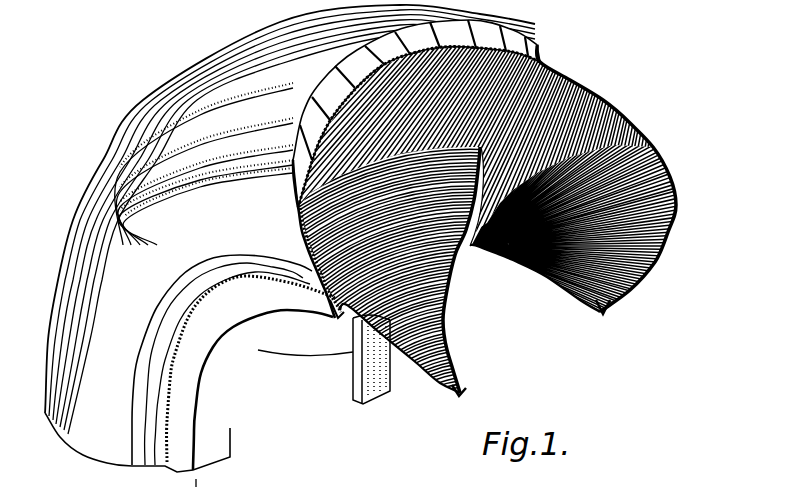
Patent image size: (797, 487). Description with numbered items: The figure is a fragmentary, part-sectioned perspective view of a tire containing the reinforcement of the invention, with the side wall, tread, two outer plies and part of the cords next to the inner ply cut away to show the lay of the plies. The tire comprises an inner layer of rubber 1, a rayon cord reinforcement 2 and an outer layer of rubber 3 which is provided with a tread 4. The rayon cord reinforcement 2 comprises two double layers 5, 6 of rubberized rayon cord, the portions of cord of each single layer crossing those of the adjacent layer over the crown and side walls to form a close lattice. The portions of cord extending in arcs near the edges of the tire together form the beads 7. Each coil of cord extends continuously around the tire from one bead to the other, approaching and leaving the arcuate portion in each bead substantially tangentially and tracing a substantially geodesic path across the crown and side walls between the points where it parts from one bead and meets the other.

The inner layer of rubber 1 is at (300, 348).
The rayon cord reinforcement 2 is at (597, 103).
The outer layer of rubber 3 is at (292, 199).
The tread 4 is at (528, 45).
The double layer of rubberized rayon cord 5 is at (444, 304).
The double layer of rubberized rayon cord 6 is at (293, 229).
The beads 7 is at (602, 316).